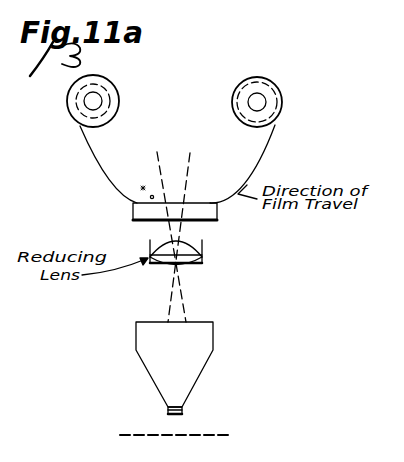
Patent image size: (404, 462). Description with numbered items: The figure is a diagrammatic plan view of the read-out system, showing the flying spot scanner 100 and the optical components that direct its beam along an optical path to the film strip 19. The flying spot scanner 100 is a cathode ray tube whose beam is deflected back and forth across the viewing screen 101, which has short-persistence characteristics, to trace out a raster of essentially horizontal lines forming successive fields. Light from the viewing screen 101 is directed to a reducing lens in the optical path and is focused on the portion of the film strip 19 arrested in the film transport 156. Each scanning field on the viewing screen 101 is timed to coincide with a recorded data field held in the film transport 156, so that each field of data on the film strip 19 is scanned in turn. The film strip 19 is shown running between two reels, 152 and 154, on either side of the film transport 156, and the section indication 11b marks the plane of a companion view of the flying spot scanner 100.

The film supply reel 152 is at (118, 93).
The film take-up reel 154 is at (284, 97).
The film strip 19 is at (110, 177).
The film transport 156 is at (219, 215).
The flying spot scanner 100 is at (134, 356).
The viewing screen 101 is at (193, 322).
The section line 11b is at (135, 307).